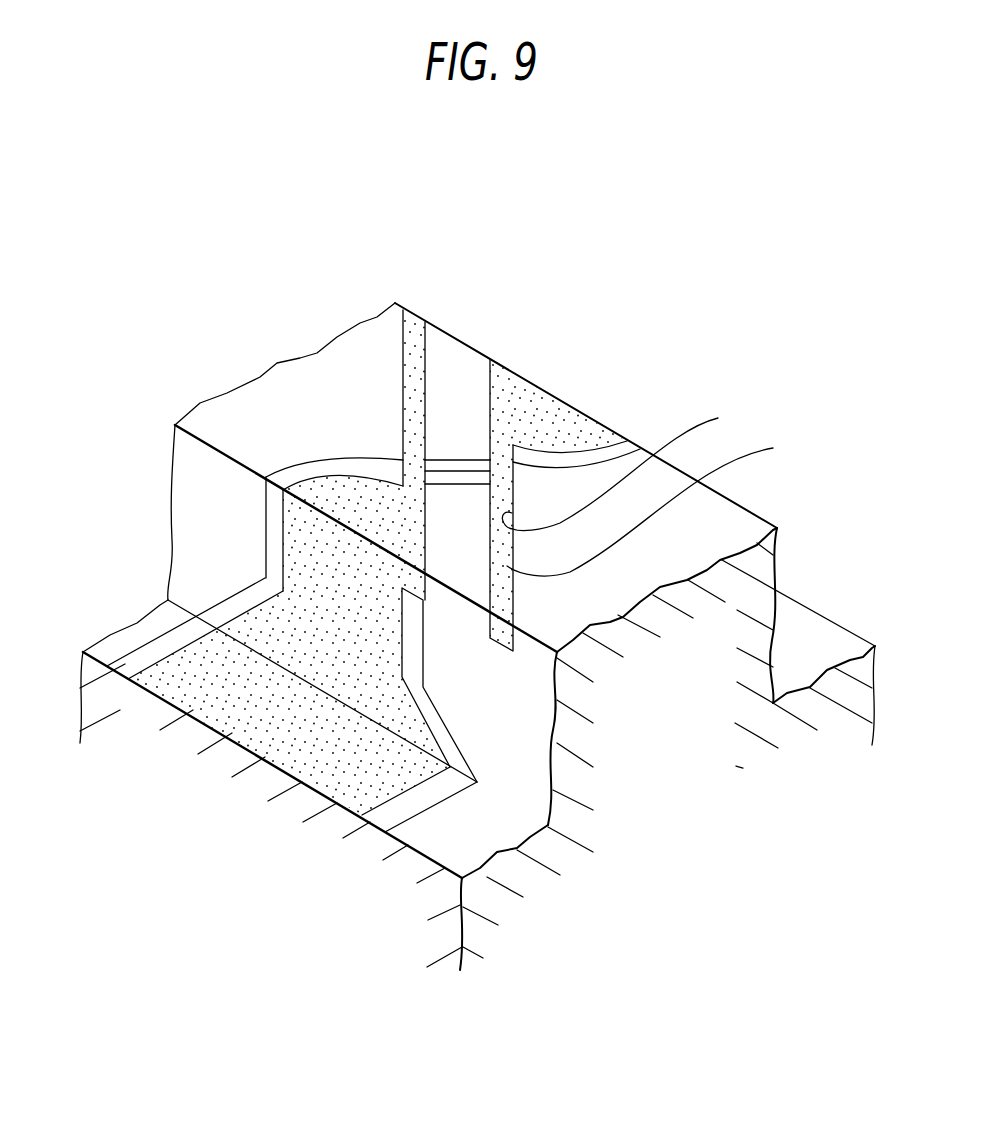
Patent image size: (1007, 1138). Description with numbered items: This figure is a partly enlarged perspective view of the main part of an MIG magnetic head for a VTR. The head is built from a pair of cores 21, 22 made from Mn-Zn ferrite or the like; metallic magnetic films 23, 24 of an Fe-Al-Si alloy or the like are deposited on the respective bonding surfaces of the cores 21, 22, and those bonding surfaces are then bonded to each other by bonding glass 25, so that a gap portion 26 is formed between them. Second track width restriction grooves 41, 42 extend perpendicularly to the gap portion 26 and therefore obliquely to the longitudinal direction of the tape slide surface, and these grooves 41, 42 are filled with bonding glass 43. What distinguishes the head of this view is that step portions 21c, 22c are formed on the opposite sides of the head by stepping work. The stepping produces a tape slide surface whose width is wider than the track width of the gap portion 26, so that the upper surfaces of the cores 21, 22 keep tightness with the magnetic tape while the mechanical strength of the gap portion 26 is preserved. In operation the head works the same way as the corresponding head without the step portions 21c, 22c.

The core 21 is at (347, 393).
The core 22 is at (677, 733).
The metallic magnetic film 23 is at (310, 477).
The metallic magnetic film 24 is at (617, 450).
The bonding glass 25 is at (540, 423).
The gap portion 26 is at (465, 473).
The second track width restriction groove 41 is at (626, 468).
The second track width restriction groove 42 is at (408, 325).
The bonding glass 43 is at (340, 282).
The step portion 21c is at (163, 622).
The step portion 22c is at (438, 832).